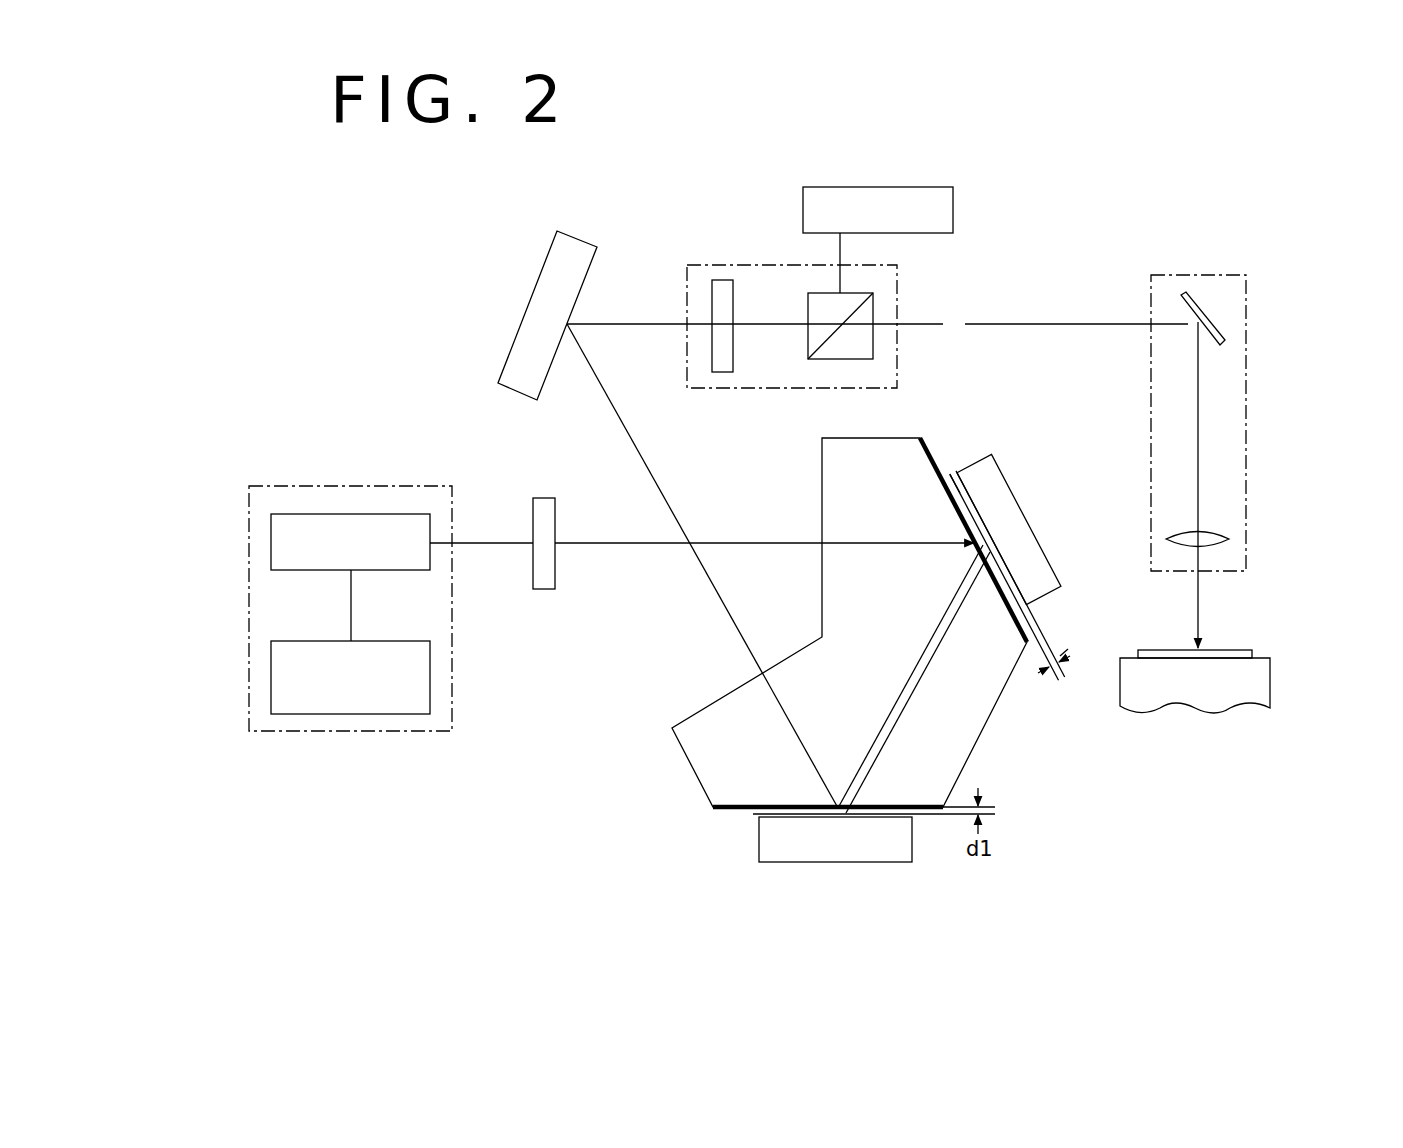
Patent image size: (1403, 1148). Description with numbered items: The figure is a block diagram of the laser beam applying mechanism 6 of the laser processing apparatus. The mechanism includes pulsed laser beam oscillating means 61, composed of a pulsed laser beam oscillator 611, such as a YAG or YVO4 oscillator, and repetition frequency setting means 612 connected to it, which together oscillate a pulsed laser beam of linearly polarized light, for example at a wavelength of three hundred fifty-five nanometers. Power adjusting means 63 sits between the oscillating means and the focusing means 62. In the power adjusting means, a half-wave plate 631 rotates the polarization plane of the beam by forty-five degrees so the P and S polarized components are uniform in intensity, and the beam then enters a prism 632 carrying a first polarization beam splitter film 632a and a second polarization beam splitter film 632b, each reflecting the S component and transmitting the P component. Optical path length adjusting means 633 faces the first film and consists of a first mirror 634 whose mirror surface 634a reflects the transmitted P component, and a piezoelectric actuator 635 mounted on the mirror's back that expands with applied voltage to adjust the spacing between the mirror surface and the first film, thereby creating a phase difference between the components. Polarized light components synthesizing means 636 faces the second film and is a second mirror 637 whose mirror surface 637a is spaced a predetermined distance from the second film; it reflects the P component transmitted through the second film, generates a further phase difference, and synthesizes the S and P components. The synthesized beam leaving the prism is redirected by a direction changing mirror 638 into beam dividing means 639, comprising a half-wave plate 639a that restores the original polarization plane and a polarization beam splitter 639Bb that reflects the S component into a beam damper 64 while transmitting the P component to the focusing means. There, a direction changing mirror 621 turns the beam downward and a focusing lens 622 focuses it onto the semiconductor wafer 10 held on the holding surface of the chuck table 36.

The laser beam applying mechanism 6 is at (624, 160).
The pulsed laser beam oscillating means 61 is at (277, 476).
The pulsed laser beam oscillator 611 is at (342, 514).
The repetition frequency setting means 612 is at (352, 714).
The focusing means 62 is at (1216, 270).
The direction changing mirror 621 is at (1226, 326).
The focusing lens 622 is at (1222, 534).
The power adjusting means 63 is at (653, 693).
The half-wave plate 631 is at (538, 589).
The prism 632 is at (990, 740).
The first polarization beam splitter film 632a is at (936, 452).
The second polarization beam splitter film 632b is at (730, 812).
The optical path length adjusting means 633 is at (1006, 447).
The first mirror 634 is at (1024, 604).
The mirror surface 634a is at (949, 474).
The piezoelectric actuator 635 is at (1013, 509).
The polarized light components synthesizing means 636 is at (888, 866).
The second mirror 637 is at (845, 855).
The mirror surface 637a is at (754, 815).
The direction changing mirror 638 is at (538, 270).
The beam dividing means 639 is at (773, 260).
The half-wave plate 639a is at (712, 296).
The polarization beam splitter 639Bb is at (873, 305).
The beam damper 64 is at (885, 178).
The semiconductor wafer 10 is at (1161, 650).
The chuck table 36 is at (1264, 684).